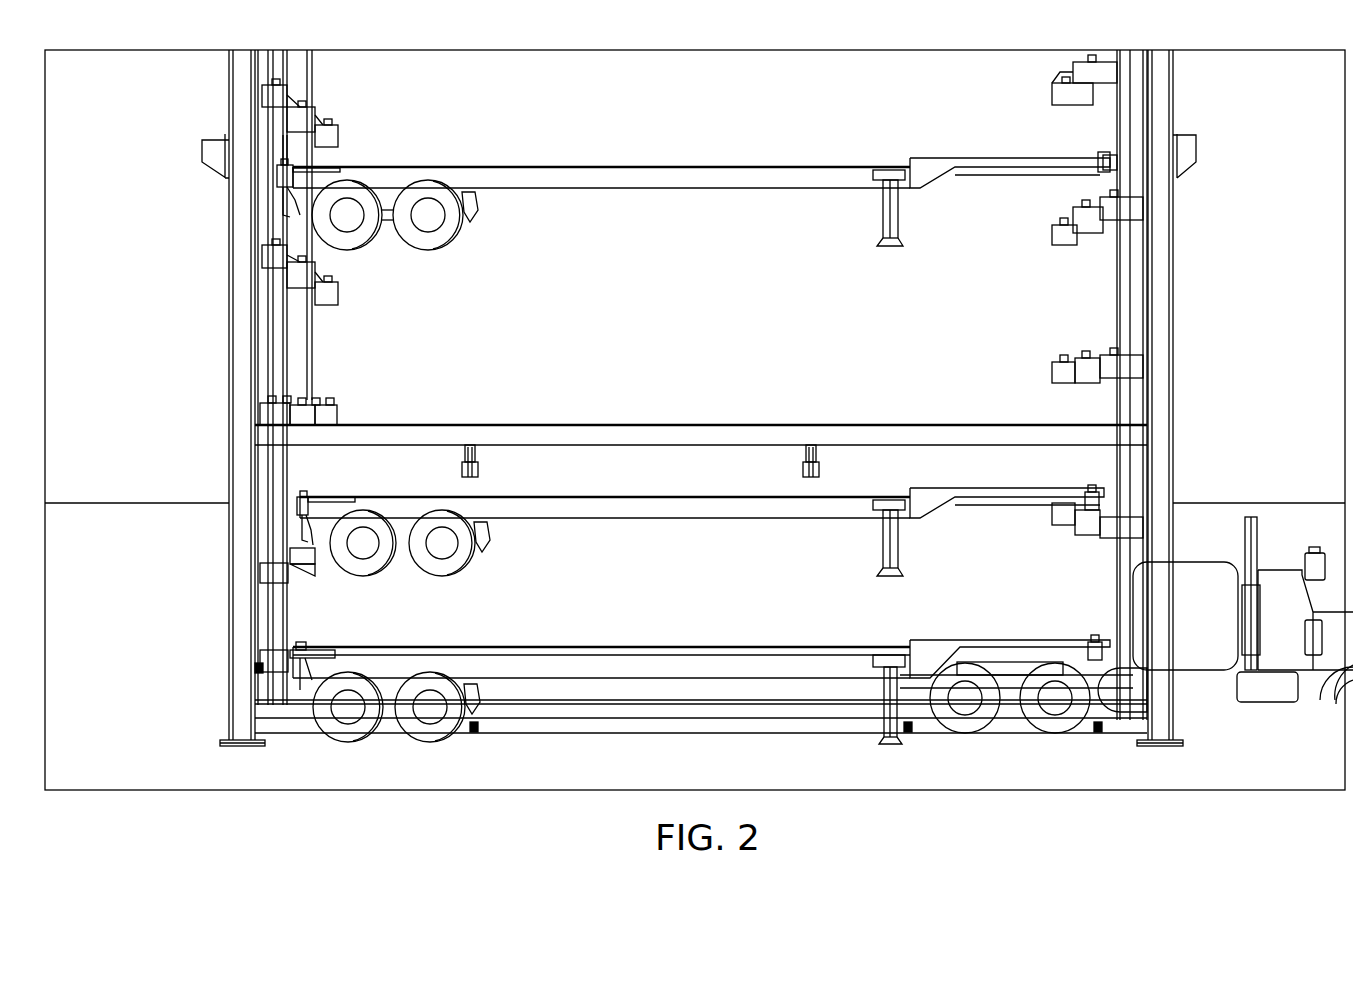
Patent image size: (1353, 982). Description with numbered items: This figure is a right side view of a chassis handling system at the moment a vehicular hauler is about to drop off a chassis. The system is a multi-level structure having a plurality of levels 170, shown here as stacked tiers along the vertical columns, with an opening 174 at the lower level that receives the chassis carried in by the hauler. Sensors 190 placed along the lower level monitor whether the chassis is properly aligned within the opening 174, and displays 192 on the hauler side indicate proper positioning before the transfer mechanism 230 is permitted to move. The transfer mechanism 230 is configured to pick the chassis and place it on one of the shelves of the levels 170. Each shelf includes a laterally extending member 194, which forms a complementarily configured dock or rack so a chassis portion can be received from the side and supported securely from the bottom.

The plurality of levels 170 is at (182, 124).
The opening 174 is at (222, 622).
The sensors 190 is at (255, 667).
The displays 192 is at (1312, 553).
The laterally extending member 194 is at (283, 560).
The transfer mechanism 230 is at (773, 422).